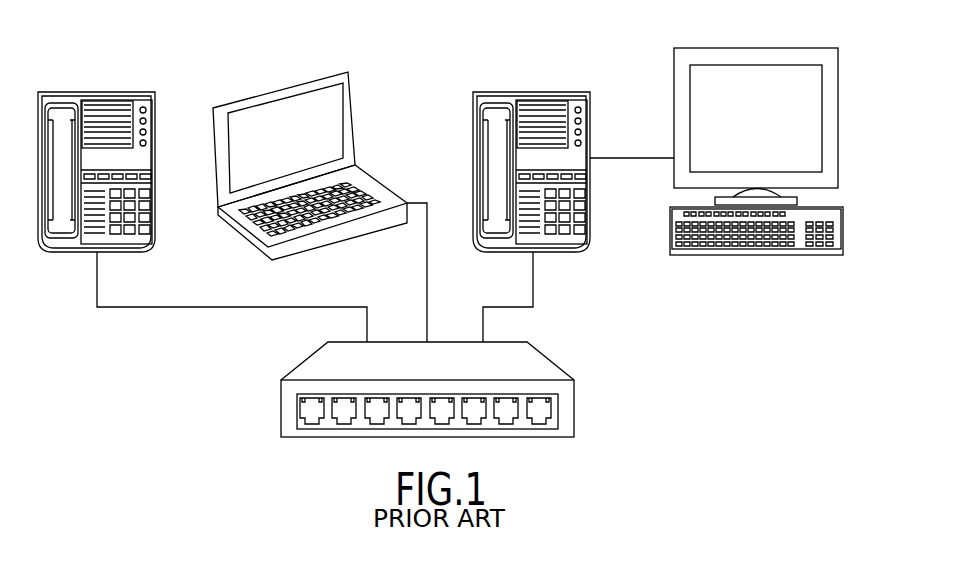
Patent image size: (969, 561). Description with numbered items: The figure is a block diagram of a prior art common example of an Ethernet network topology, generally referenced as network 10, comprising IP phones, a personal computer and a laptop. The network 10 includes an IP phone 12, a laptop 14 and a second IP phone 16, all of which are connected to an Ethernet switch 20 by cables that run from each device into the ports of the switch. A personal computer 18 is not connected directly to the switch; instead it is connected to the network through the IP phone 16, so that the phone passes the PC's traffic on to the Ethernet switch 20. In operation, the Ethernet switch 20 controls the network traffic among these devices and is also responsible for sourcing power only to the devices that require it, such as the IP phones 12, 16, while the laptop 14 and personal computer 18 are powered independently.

The network 10 is at (140, 413).
The IP phone 12 is at (107, 92).
The laptop 14 is at (303, 83).
The IP phone 16 is at (502, 92).
The personal computer 18 is at (737, 48).
The Ethernet switch 20 is at (575, 410).